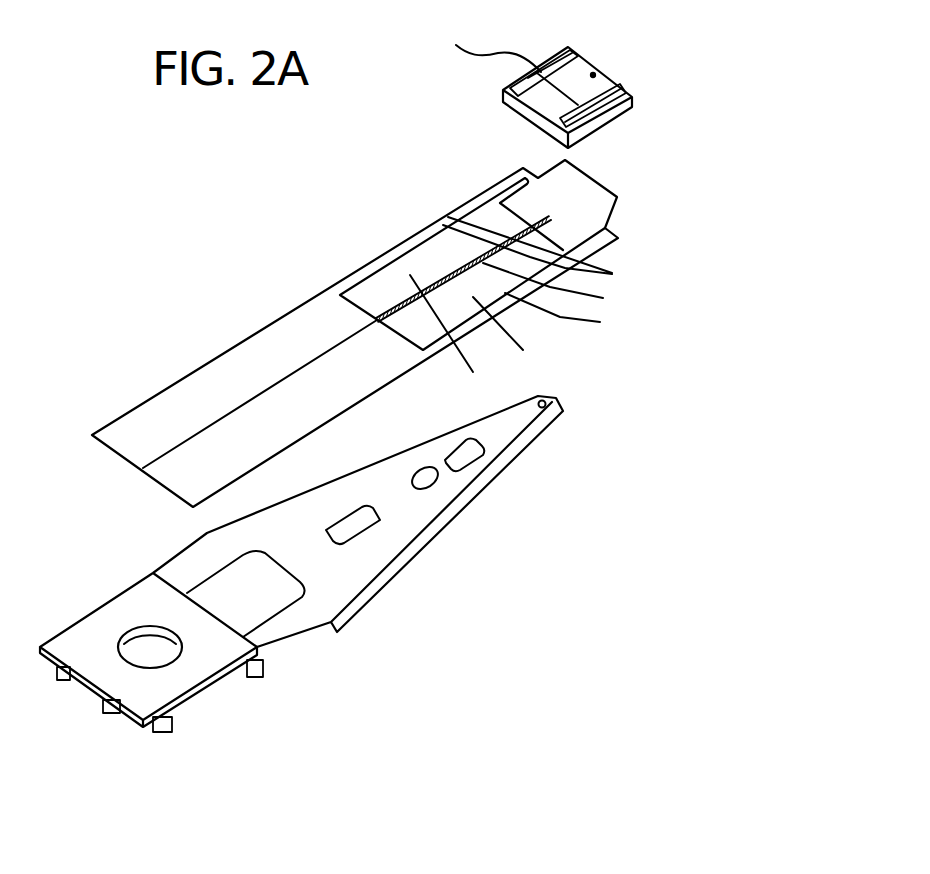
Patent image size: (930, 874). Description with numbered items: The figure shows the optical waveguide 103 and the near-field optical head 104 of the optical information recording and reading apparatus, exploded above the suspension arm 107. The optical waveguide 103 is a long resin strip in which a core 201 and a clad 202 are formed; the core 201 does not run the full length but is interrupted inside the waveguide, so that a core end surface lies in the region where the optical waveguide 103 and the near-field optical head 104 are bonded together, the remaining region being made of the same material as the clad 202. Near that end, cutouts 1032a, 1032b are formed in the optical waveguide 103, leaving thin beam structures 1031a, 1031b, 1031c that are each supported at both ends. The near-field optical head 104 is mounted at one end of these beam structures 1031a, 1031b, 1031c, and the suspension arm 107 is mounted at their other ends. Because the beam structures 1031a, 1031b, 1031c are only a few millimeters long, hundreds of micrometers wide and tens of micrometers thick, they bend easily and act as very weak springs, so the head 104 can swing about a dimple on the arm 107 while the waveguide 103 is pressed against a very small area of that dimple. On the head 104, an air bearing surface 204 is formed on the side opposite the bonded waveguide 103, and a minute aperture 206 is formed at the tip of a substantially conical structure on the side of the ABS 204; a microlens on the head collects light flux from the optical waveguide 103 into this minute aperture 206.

The core 201 is at (203, 427).
The clad 202 is at (265, 352).
The optical waveguide 103 is at (617, 197).
The near-field optical head 104 is at (632, 100).
The suspension arm 107 is at (410, 535).
The air bearing surface 204 is at (485, 45).
The minute aperture 206 is at (593, 75).
The both end-supported beam structure 1031a is at (612, 274).
The both end-supported beam structure 1031b is at (603, 298).
The both end-supported beam structure 1031c is at (600, 322).
The cutout 1032a is at (523, 350).
The cutout 1032b is at (473, 372).